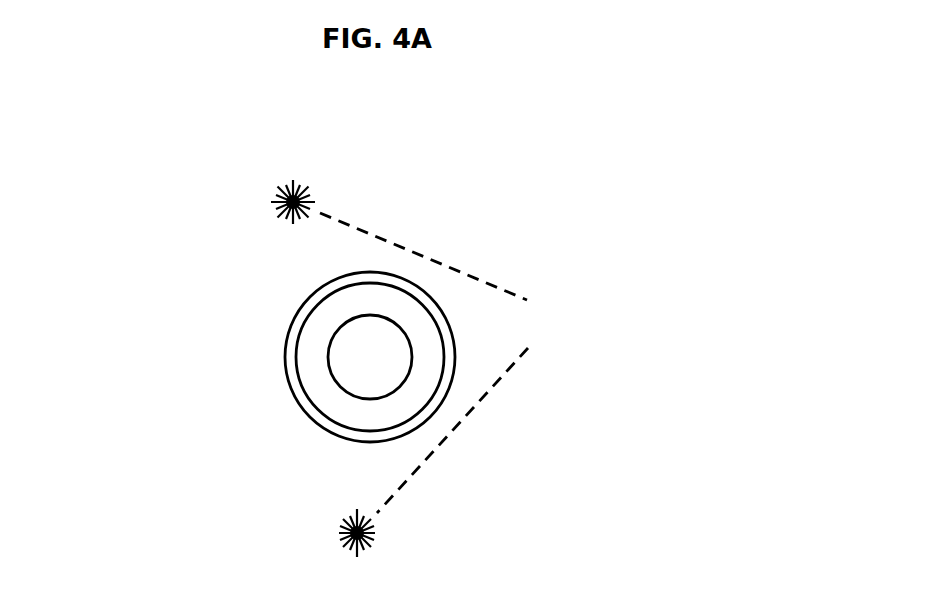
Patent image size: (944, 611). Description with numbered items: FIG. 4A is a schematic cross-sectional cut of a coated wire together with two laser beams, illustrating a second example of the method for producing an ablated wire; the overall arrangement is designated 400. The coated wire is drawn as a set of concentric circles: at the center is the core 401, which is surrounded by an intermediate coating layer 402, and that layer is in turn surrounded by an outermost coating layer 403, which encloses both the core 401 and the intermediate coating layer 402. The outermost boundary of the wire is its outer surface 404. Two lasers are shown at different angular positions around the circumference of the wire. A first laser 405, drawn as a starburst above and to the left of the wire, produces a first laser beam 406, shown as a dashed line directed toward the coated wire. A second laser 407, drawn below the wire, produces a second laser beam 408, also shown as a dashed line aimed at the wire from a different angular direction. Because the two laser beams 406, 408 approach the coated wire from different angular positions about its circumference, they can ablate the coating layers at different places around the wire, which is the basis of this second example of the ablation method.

The optical system 400 is at (853, 78).
The core 401 is at (398, 355).
The intermediate coating layer 402 is at (314, 377).
The outermost coating layer 403 is at (294, 342).
The outer surface 404 is at (290, 308).
The laser 405 is at (268, 197).
The laser beam 406 is at (480, 279).
The laser 407 is at (338, 530).
The laser beam 408 is at (467, 420).